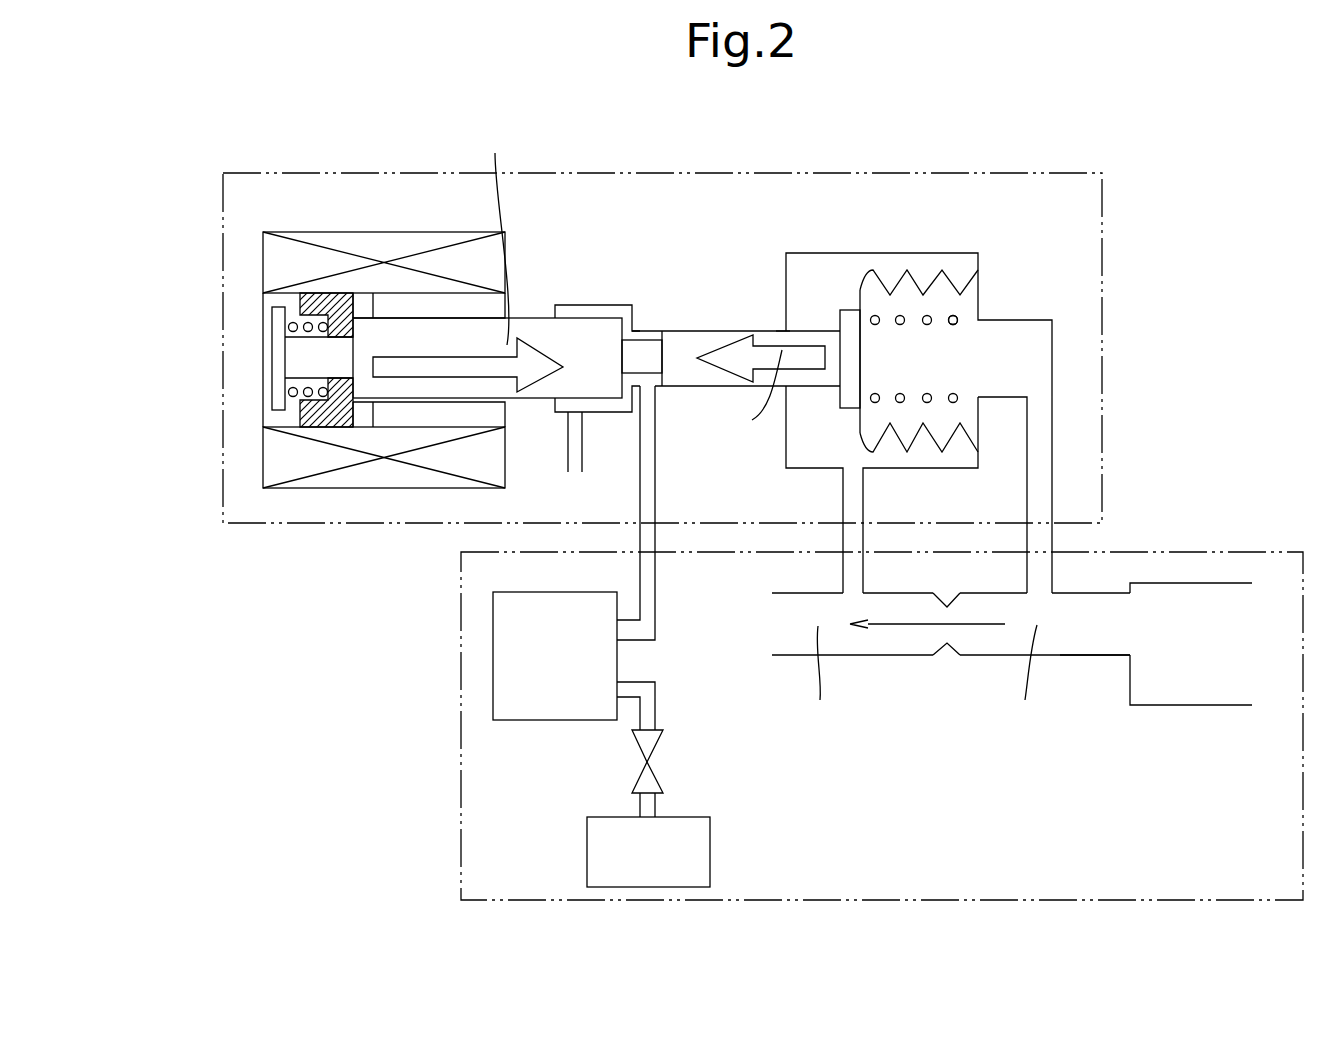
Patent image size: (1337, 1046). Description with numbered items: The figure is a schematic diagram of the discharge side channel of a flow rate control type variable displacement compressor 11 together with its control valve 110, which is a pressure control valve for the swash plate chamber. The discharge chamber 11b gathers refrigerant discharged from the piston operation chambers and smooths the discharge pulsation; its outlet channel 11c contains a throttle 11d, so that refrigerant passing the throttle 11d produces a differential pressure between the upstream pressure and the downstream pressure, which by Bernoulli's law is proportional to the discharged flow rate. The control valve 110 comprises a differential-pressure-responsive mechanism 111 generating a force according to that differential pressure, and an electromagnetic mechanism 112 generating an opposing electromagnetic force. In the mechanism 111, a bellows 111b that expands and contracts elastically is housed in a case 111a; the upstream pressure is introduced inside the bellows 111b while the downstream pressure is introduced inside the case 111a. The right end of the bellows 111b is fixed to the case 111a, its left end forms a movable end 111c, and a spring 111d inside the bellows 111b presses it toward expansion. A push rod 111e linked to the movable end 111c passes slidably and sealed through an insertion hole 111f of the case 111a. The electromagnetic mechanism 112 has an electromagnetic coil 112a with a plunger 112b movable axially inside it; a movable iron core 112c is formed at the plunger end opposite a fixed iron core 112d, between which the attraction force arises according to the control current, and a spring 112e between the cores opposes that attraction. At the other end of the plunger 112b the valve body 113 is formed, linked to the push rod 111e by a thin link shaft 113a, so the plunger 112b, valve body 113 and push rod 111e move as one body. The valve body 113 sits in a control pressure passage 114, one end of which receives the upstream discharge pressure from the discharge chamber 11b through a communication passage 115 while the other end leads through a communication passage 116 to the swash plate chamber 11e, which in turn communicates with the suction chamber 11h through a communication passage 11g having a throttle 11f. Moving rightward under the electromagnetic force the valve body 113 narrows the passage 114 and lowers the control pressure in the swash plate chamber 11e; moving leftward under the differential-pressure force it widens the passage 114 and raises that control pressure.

The variable displacement compressor 11 is at (1224, 537).
The discharge chamber 11b is at (1195, 706).
The outlet channel 11c is at (1085, 657).
The throttle 11d is at (947, 646).
The swash plate chamber 11e is at (515, 722).
The throttle 11f is at (632, 749).
The communication passage 11g is at (657, 700).
The suction chamber 11h is at (711, 850).
The control valve 110 is at (706, 172).
The differential-pressure-responsive mechanism 111 is at (962, 240).
The case 111a is at (802, 252).
The bellows 111b is at (913, 272).
The movable end 111c is at (852, 311).
The spring 111d is at (957, 318).
The push rod 111e is at (735, 330).
The insertion hole 111f is at (783, 329).
The electromagnetic mechanism 112 is at (382, 229).
The electromagnetic coil 112a is at (288, 254).
The plunger 112b is at (460, 320).
The movable iron core 112c is at (272, 320).
The fixed iron core 112d is at (318, 300).
The spring 112e is at (292, 396).
The valve body 113 is at (585, 333).
The link shaft 113a is at (648, 358).
The control pressure passage 114 is at (640, 333).
The communication passage 115 is at (556, 455).
The communication passage 116 is at (658, 490).